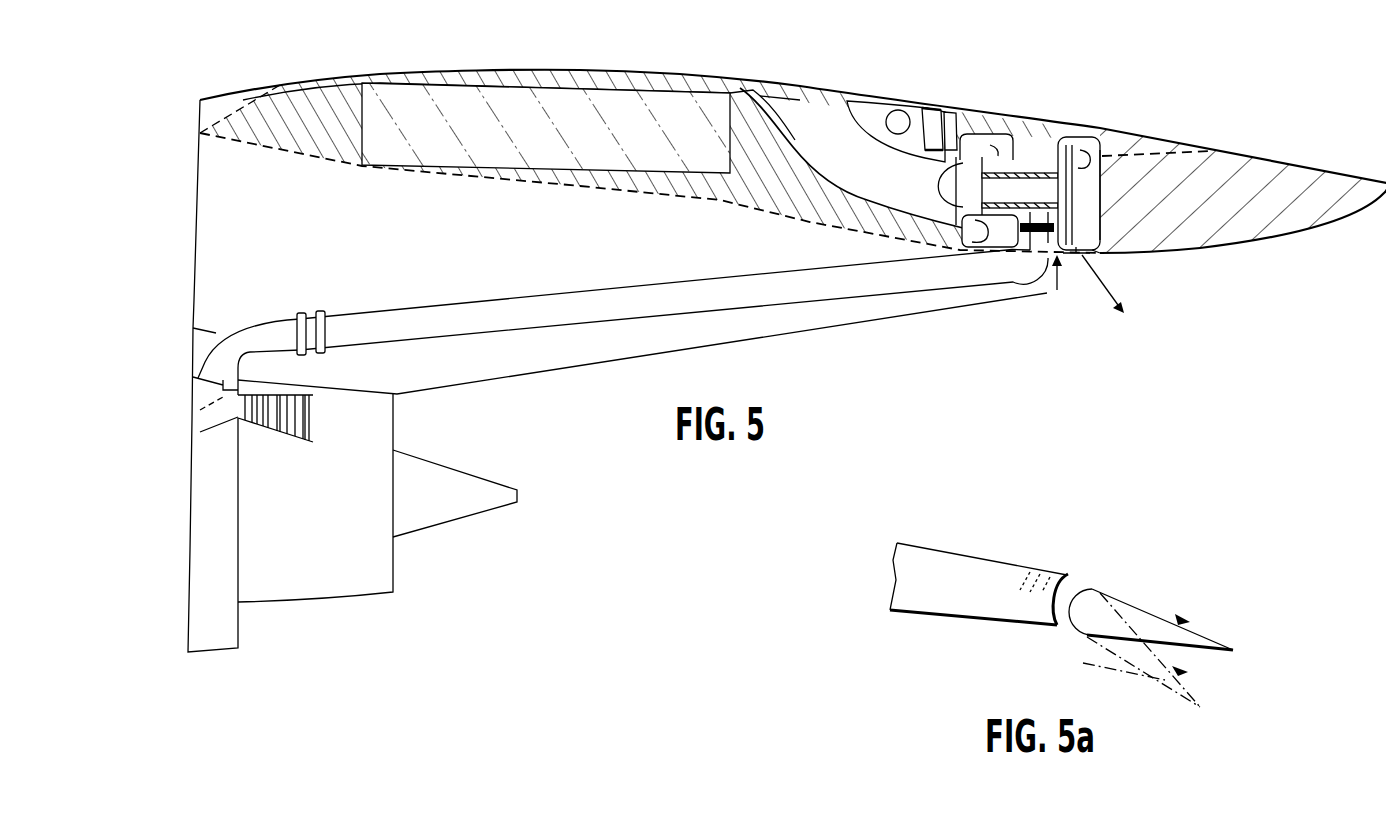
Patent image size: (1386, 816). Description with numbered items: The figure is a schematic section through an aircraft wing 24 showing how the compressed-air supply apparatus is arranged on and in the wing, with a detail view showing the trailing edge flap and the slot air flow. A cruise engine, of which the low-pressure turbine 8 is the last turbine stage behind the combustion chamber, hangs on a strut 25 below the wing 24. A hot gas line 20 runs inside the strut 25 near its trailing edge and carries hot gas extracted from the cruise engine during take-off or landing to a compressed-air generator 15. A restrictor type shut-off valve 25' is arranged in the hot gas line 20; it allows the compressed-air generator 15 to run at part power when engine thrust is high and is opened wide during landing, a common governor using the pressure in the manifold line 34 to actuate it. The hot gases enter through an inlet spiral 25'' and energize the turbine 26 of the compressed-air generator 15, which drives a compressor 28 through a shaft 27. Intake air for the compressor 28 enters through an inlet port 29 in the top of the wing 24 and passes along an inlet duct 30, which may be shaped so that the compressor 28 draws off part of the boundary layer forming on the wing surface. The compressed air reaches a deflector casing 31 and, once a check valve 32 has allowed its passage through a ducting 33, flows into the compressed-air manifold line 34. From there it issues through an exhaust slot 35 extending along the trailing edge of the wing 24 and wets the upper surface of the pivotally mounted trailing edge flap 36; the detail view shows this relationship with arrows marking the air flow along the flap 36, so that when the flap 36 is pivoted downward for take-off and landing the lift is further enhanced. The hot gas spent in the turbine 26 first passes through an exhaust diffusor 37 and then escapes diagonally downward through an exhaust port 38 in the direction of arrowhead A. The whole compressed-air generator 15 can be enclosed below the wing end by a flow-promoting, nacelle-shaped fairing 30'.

In FIG. 5, the low-pressure turbine 8 is at (298, 402).
In FIG. 5, the compressed-air generator 15 is at (1057, 290).
In FIG. 5, the hot gas line 20 is at (552, 305).
In FIG. 5, the wing 24 is at (633, 83).
In FIG. 5a, the wing 24 is at (970, 597).
In FIG. 5, the strut 25 is at (459, 367).
In FIG. 5, the shut-off valve 25' is at (326, 313).
In FIG. 5, the inlet spiral 25'' is at (642, 323).
In FIG. 5, the turbine 26 is at (1075, 157).
In FIG. 5, the shaft 27 is at (1000, 247).
In FIG. 5, the compressor 28 is at (905, 222).
In FIG. 5, the inlet port 29 is at (806, 88).
In FIG. 5, the inlet duct 30 is at (851, 158).
In FIG. 5, the fairing 30' is at (1243, 203).
In FIG. 5, the deflector casing 31 is at (1012, 158).
In FIG. 5, the check valve 32 is at (952, 128).
In FIG. 5, the ducting 33 is at (992, 140).
In FIG. 5, the compressed-air manifold line 34 is at (896, 109).
In FIG. 5, the exhaust slot 35 is at (942, 108).
In FIG. 5, the trailing edge flap 36 is at (1035, 140).
In FIG. 5a, the trailing edge flap 36 is at (1093, 612).
In FIG. 5, the exhaust diffusor 37 is at (1096, 254).
In FIG. 5, the exhaust port 38 is at (1073, 258).
In FIG. 5, the arrowhead A is at (1124, 300).